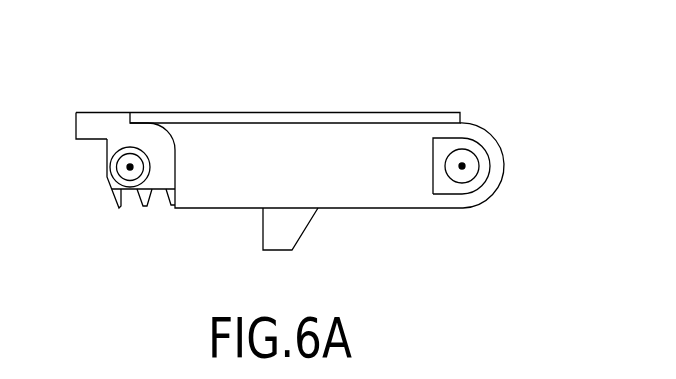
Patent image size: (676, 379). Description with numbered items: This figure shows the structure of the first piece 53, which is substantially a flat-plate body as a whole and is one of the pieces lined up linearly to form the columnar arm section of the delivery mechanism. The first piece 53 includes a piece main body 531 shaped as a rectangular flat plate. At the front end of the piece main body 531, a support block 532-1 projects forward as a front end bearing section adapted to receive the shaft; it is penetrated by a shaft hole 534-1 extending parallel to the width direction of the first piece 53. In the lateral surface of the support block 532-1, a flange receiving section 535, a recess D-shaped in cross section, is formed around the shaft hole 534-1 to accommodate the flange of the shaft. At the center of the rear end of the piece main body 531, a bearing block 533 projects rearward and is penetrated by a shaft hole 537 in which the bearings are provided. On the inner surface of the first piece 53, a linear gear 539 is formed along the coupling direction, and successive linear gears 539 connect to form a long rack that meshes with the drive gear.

The first piece 53 is at (302, 80).
The piece main body 531 is at (233, 112).
The bearing block 533 is at (106, 155).
The flange receiving section 535 is at (451, 137).
The shaft hole 537 is at (130, 167).
The linear gear 539 is at (143, 191).
The shaft hole 534-1 is at (462, 166).
The support block 532-1 is at (466, 210).